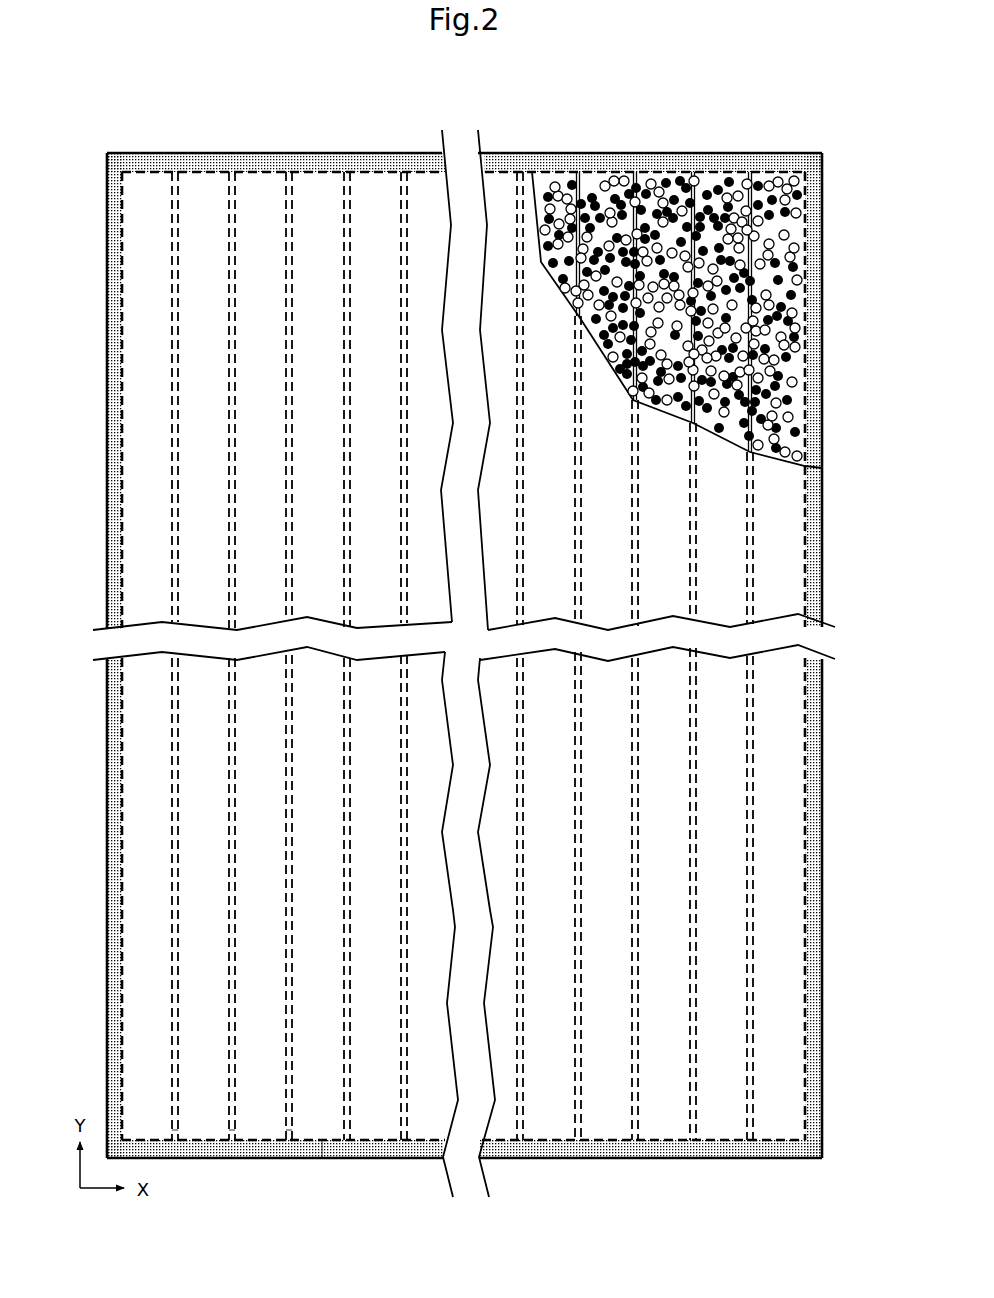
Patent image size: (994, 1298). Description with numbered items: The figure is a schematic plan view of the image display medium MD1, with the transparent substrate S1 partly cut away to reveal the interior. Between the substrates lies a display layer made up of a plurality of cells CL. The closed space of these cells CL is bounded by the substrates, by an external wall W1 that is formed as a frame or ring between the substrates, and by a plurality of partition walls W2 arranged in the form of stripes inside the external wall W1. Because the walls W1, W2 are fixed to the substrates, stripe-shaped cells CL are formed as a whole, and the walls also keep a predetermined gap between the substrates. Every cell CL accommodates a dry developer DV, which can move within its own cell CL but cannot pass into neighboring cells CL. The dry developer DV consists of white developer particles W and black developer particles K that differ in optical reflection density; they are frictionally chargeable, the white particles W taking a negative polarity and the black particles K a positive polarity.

The image display medium MD1 is at (101, 127).
The cell CL is at (473, 621).
The white developer particles W is at (783, 470).
The black developer particles K is at (797, 464).
The dry developer DV is at (755, 505).
The substrate S1 is at (826, 583).
The external wall W1 is at (330, 1152).
The partition walls W2 is at (178, 1146).